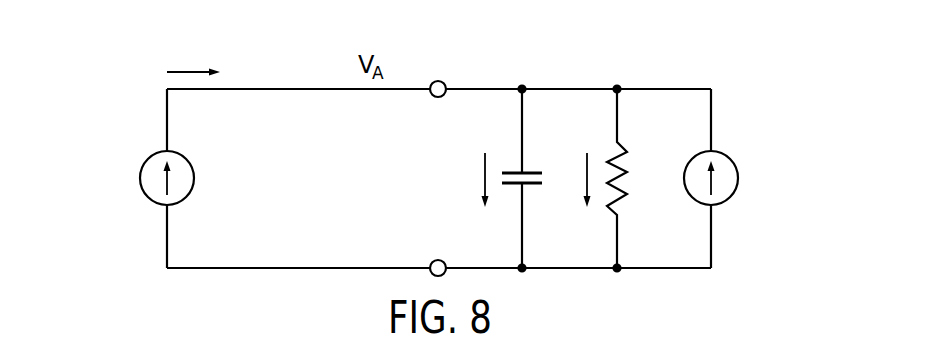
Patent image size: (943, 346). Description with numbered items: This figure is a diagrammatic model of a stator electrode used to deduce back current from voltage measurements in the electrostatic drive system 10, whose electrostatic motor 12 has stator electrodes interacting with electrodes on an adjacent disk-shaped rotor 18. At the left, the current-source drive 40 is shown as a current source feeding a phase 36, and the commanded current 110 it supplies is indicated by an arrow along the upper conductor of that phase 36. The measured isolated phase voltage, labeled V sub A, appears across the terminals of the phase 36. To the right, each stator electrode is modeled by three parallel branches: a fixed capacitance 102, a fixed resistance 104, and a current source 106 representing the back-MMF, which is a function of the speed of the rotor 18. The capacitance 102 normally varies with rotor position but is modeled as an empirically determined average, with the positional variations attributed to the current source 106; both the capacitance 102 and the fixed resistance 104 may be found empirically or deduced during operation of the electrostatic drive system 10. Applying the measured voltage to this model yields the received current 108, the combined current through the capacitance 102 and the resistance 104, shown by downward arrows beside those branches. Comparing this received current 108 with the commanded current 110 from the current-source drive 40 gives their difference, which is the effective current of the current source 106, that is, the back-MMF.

The electrostatic drive system 10 is at (94, 80).
The electrostatic motor 12 is at (744, 58).
The rotor 18 is at (635, 42).
The phase 36 is at (253, 88).
The current-source drive 40 is at (186, 200).
The capacitance 102 is at (528, 172).
The fixed resistance 104 is at (612, 207).
The current source 106 is at (730, 198).
The received current 108 is at (482, 175).
The commanded current 110 is at (184, 71).